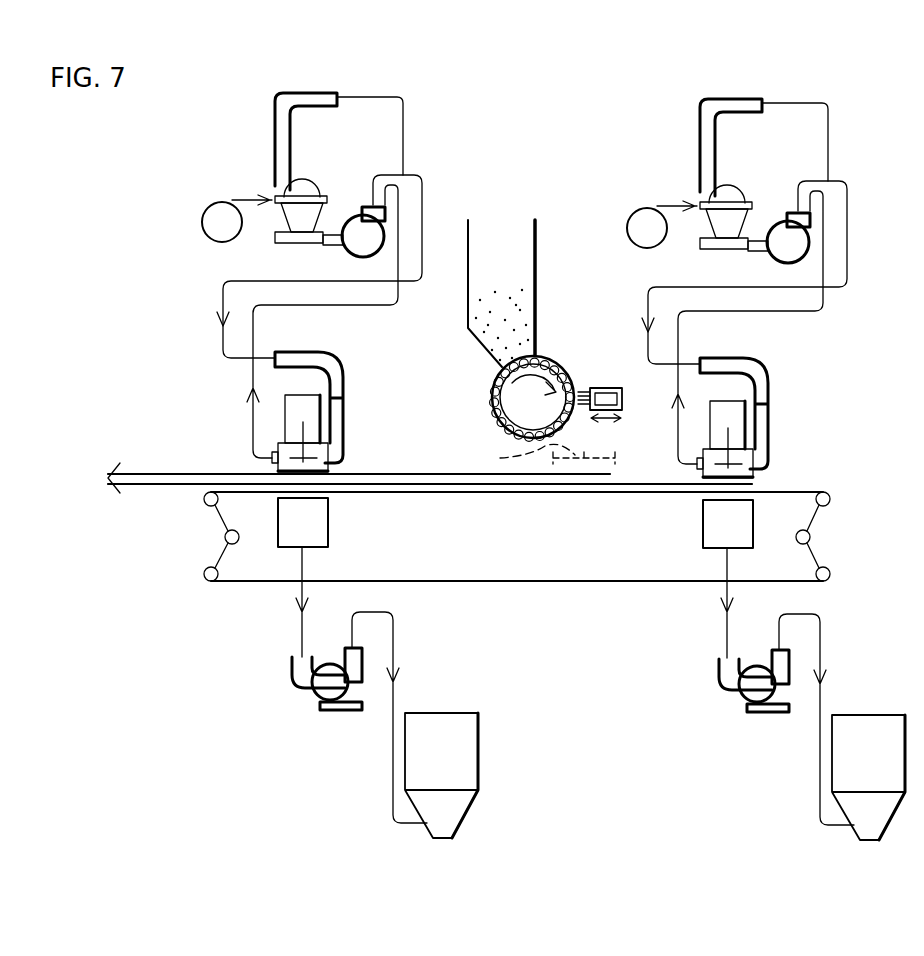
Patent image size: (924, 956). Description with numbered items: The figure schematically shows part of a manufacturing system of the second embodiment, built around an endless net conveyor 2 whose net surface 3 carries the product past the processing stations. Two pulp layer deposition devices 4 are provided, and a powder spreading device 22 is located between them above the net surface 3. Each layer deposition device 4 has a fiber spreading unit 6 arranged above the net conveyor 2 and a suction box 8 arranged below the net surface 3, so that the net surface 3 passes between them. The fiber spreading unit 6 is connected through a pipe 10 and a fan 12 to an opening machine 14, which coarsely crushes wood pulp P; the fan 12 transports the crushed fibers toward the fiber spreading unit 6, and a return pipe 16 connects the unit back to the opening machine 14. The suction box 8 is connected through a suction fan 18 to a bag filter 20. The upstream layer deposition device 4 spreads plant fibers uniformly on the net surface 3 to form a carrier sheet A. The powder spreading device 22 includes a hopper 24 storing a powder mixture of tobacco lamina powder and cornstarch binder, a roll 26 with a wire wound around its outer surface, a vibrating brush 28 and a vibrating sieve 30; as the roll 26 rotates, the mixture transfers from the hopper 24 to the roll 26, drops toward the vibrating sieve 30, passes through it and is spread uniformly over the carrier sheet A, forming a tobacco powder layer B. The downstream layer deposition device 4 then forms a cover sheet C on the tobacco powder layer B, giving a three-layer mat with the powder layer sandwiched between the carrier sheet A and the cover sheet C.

The net conveyor 2 is at (847, 546).
The net surface 3 is at (624, 497).
The pulp layer deposition device 4 is at (203, 379).
The fiber spreading unit 6 is at (342, 456).
The suction box 8 is at (285, 548).
The pipe 10 is at (345, 370).
The fan 12 is at (354, 215).
The opening machine 14 is at (305, 178).
The return pipe 16 is at (253, 420).
The suction fan 18 is at (365, 690).
The bag filter 20 is at (460, 713).
The powder spreading device 22 is at (507, 200).
The hopper 24 is at (538, 269).
The roll 26 is at (492, 406).
The vibrating brush 28 is at (608, 387).
The vibrating sieve 30 is at (541, 458).
The carrier sheet A is at (753, 484).
The tobacco powder layer B is at (617, 479).
The cover sheet C is at (166, 460).
The wood pulp P is at (205, 208).